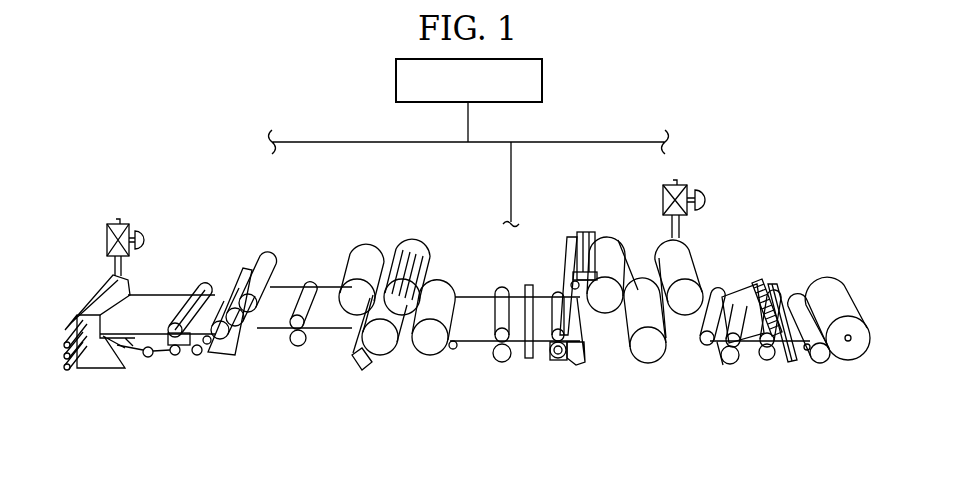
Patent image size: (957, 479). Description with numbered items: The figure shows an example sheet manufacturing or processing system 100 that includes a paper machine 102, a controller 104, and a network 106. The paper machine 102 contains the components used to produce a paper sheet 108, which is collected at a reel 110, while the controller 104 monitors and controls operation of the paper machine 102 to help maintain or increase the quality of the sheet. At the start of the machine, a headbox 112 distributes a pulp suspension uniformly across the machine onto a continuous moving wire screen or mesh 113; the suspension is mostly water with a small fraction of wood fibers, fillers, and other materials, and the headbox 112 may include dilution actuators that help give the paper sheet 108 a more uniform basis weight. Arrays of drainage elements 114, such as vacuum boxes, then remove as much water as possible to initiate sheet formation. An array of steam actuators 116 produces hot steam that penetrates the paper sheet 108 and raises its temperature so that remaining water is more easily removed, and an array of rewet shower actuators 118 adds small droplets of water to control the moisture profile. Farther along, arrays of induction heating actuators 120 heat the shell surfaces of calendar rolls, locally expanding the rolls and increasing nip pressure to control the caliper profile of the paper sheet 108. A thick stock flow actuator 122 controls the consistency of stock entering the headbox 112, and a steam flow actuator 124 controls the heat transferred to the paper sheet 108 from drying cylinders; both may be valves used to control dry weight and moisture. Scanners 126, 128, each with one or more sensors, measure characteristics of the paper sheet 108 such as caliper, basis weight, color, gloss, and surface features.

The sheet manufacturing or processing system 100 is at (316, 60).
The paper machine 102 is at (258, 207).
The controller 104 is at (542, 80).
The network 106 is at (344, 140).
The paper sheet 108 is at (275, 332).
The reel 110 is at (850, 362).
The headbox 112 is at (78, 310).
The wire screen or mesh 113 is at (162, 352).
The drainage elements 114 is at (188, 353).
The steam actuators 116 is at (372, 360).
The rewet shower actuators 118 is at (578, 232).
The induction heating actuators 120 is at (728, 362).
The thick stock flow actuator 122 is at (148, 240).
The steam flow actuator 124 is at (708, 197).
The scanner 126 is at (528, 358).
The scanner 128 is at (775, 285).